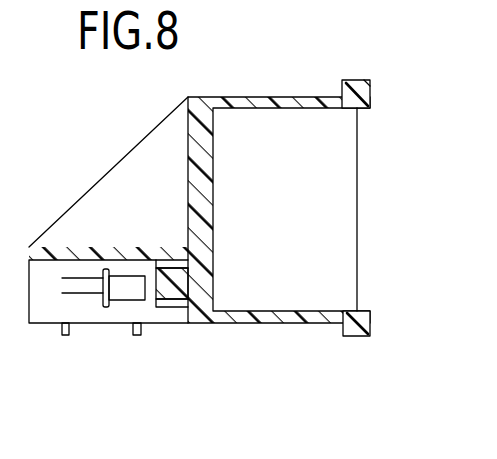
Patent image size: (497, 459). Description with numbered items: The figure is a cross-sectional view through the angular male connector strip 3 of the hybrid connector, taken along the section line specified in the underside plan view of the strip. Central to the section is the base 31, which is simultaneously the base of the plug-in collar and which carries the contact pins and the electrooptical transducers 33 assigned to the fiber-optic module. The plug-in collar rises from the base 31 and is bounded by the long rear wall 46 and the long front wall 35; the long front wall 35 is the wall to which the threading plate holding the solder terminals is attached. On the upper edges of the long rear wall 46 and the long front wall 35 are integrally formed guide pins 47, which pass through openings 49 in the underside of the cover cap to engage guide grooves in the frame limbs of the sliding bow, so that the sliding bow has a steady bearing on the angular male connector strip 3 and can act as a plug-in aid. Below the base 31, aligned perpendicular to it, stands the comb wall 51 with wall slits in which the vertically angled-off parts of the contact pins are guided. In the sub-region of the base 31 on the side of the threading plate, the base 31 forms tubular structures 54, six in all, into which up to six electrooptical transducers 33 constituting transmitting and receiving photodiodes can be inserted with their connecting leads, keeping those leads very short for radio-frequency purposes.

The angular male connector strip 3 is at (261, 97).
The base 31 is at (213, 173).
The electrooptical transducers 33 is at (127, 280).
The long front wall 35 is at (264, 323).
The long rear wall 46 is at (300, 98).
The guide pins 47 is at (351, 80).
The openings 49 is at (346, 229).
The comb wall 51 is at (82, 254).
The tubular structures 54 is at (155, 285).